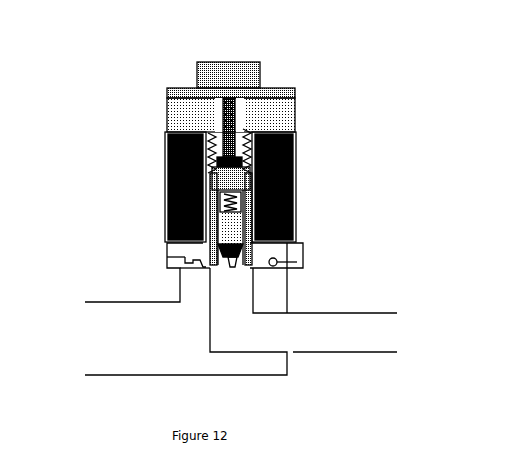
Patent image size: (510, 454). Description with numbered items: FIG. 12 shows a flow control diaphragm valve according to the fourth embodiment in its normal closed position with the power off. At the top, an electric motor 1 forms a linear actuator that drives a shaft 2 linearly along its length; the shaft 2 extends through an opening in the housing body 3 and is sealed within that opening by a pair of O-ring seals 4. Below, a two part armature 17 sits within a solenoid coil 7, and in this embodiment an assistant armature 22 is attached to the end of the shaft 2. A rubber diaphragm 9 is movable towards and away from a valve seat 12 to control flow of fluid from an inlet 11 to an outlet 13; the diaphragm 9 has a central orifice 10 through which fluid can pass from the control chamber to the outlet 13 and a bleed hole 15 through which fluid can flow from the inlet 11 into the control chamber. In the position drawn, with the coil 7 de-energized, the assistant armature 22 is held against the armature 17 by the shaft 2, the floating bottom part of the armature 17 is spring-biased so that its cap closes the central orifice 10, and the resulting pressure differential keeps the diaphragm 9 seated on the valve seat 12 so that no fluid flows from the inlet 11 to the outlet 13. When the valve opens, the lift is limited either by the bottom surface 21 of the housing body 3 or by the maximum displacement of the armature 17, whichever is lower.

The electric motor 1 is at (232, 75).
The shaft 2 is at (233, 105).
The housing body 3 is at (292, 105).
The O-ring seals 4 is at (238, 121).
The solenoid coil 7 is at (293, 190).
The diaphragm 9 is at (263, 269).
The central orifice 10 is at (228, 267).
The inlet 11 is at (122, 333).
The valve seat 12 is at (256, 274).
The outlet 13 is at (298, 147).
The bleed hole 15 is at (180, 257).
The armature 17 is at (293, 170).
The bottom surface 21 is at (182, 247).
The assistant armature 22 is at (172, 147).